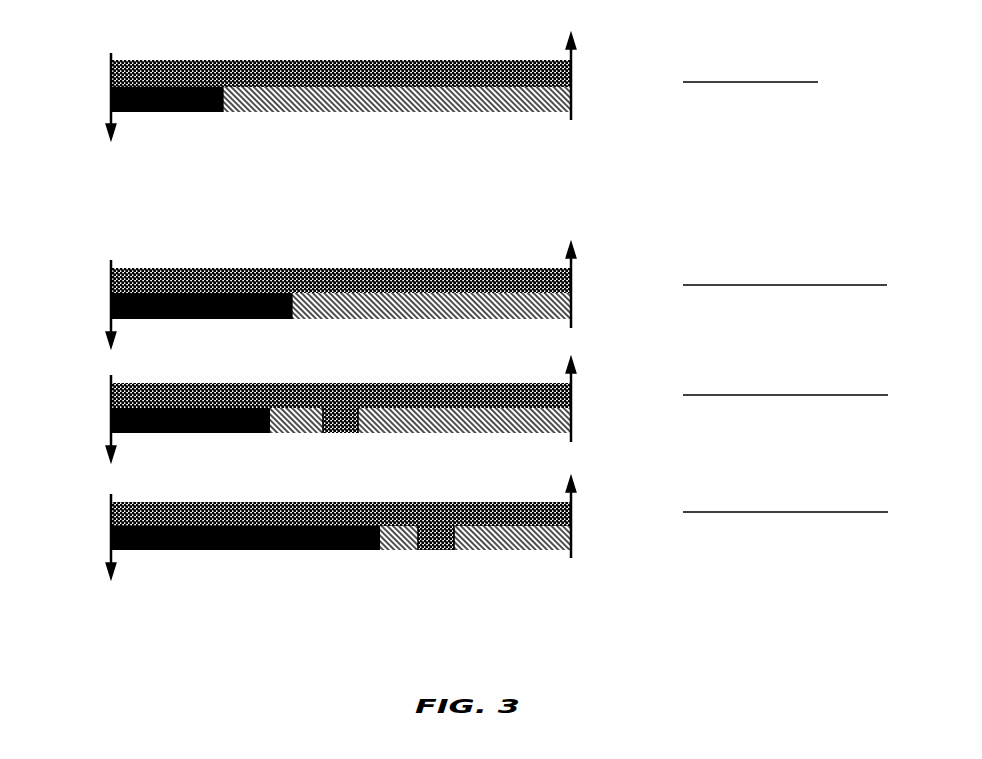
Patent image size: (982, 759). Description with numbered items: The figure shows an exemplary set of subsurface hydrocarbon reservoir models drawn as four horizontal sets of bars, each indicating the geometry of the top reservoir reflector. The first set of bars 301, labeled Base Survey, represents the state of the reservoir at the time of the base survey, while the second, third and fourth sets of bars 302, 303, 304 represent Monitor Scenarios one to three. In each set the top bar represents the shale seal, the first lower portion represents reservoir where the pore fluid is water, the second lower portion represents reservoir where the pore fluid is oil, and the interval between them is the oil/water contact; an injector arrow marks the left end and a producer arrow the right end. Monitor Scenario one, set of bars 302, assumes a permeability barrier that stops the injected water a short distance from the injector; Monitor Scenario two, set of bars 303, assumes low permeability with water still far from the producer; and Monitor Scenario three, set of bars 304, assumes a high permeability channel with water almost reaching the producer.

The first set of bars 301 is at (425, 87).
The second set of bars 302 is at (466, 295).
The third set of bars 303 is at (460, 410).
The fourth set of bars 304 is at (460, 528).